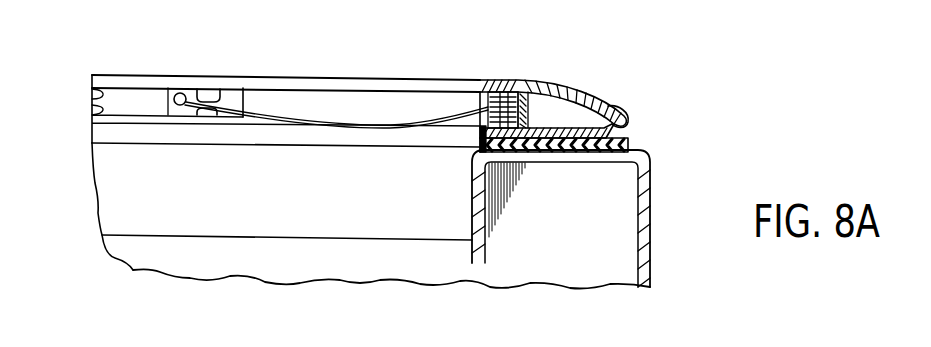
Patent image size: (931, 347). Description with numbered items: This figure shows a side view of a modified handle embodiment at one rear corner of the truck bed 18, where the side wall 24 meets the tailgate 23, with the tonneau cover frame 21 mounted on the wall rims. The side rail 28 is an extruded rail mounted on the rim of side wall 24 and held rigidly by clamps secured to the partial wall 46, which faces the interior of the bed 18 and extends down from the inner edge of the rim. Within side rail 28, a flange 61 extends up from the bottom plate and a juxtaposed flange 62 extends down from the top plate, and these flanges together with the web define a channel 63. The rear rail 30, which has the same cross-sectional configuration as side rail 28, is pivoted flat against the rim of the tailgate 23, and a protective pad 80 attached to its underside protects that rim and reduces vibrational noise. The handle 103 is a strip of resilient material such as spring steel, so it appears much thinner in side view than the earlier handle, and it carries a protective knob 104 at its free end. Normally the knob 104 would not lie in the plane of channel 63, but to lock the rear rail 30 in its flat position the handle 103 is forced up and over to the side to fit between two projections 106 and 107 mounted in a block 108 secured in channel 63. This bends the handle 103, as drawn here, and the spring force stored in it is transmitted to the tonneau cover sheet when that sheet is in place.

The bed 18 is at (297, 283).
The tonneau cover frame 21 is at (433, 80).
The tailgate 23 is at (653, 238).
The side wall 24 is at (130, 273).
The side rail 28 is at (375, 77).
The rear rail 30 is at (628, 112).
The partial wall 46 is at (211, 227).
The flange 61 is at (92, 112).
The flange 62 is at (92, 93).
The channel 63 is at (138, 103).
The protective pad 80 is at (618, 140).
The handle 103 is at (366, 127).
The protective knob 104 is at (178, 86).
The projection 106 is at (213, 88).
The projection 107 is at (216, 121).
The block 108 is at (243, 102).